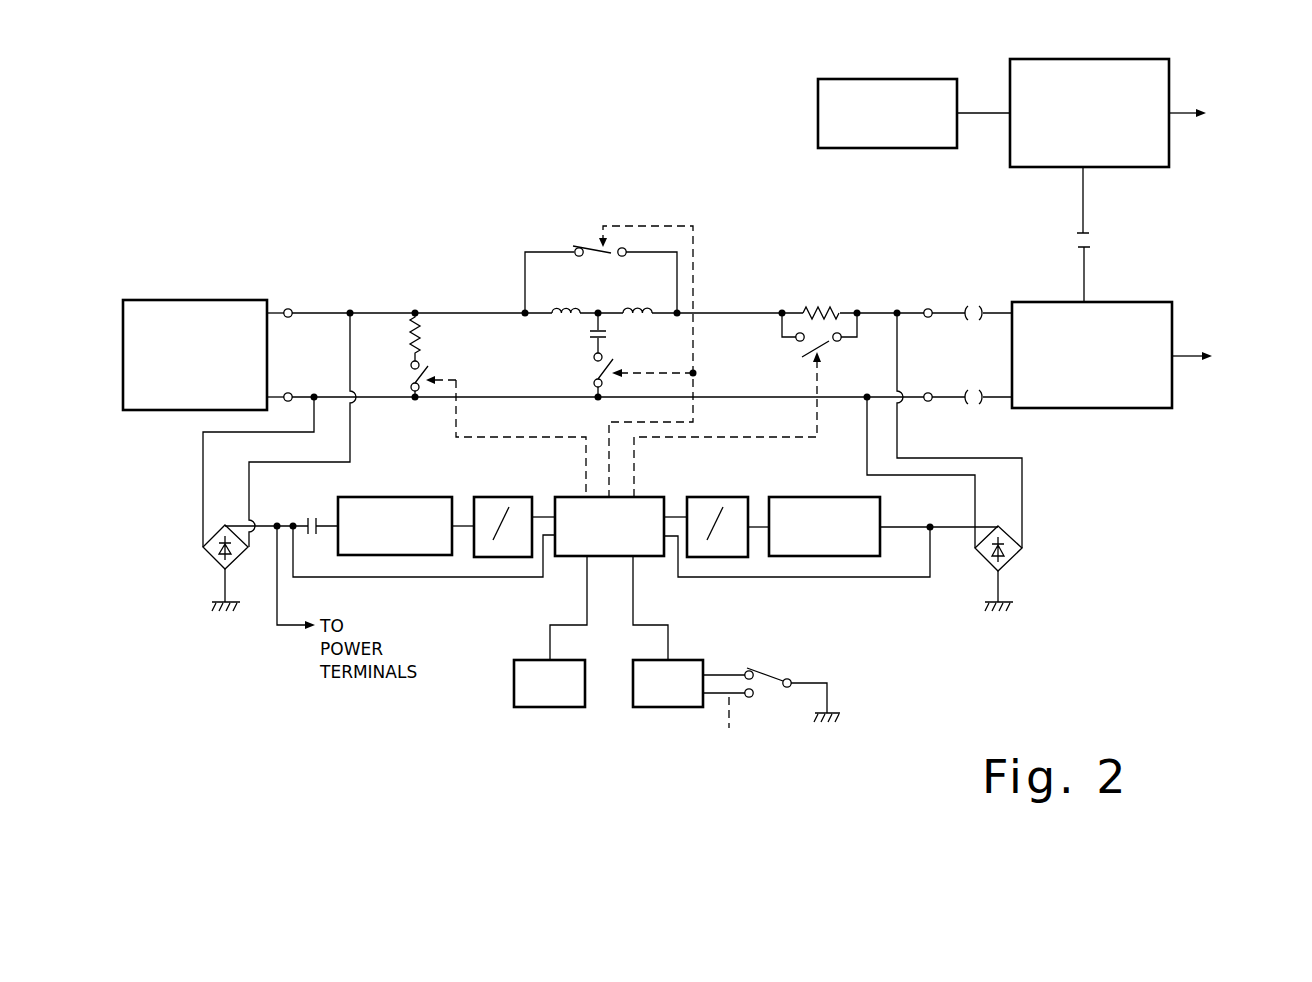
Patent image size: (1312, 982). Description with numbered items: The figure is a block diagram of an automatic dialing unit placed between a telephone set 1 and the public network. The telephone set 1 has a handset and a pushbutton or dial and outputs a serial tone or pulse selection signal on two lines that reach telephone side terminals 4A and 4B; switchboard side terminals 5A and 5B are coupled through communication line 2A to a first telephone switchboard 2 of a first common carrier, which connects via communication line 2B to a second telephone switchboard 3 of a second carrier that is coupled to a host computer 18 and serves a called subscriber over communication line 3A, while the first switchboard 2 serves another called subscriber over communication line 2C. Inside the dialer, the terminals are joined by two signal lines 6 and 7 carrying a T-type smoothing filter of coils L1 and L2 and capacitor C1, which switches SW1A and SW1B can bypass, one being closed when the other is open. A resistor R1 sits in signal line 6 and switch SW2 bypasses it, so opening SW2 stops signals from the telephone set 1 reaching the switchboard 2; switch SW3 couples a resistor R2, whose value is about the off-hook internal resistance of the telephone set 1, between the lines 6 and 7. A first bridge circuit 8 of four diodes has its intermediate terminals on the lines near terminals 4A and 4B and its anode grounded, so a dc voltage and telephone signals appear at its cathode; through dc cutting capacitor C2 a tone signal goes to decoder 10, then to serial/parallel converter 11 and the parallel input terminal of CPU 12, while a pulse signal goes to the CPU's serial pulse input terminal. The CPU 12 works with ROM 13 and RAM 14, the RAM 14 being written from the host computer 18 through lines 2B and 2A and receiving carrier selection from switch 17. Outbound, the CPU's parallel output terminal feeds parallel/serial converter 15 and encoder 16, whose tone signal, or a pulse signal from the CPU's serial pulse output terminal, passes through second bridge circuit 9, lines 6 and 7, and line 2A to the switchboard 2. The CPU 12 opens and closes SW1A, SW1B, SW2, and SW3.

The telephone set 1 is at (203, 300).
The first telephone switchboard 2 is at (1100, 408).
The communication line 2A is at (998, 400).
The communication line 2B is at (1085, 292).
The communication line 2C is at (1190, 353).
The second telephone switchboard 3 is at (1040, 167).
The communication line 3A is at (1178, 112).
The telephone side terminal 4A is at (289, 309).
The telephone side terminal 4B is at (289, 393).
The switchboard side terminal 5A is at (928, 309).
The switchboard side terminal 5B is at (929, 393).
The signal line 6 is at (735, 313).
The signal line 7 is at (740, 397).
The first bridge circuit 8 is at (213, 561).
The second bridge circuit 9 is at (1012, 562).
The decoder 10 is at (409, 497).
The serial/parallel converter 11 is at (488, 497).
The CPU 12 is at (577, 497).
The read only memory 13 is at (569, 662).
The random access memory 14 is at (686, 660).
The parallel/serial converter 15 is at (709, 497).
The encoder 16 is at (792, 497).
The switch 17 is at (768, 673).
The host computer 18 is at (851, 148).
The capacitor C1 is at (588, 338).
The dc cutting capacitor C2 is at (308, 520).
The coil L1 is at (570, 307).
The coil L2 is at (638, 307).
The resistor R1 is at (812, 311).
The resistor R2 is at (420, 334).
The switch SW1A is at (600, 254).
The switch SW1B is at (594, 380).
The switch SW2 is at (829, 345).
The switch SW3 is at (410, 379).